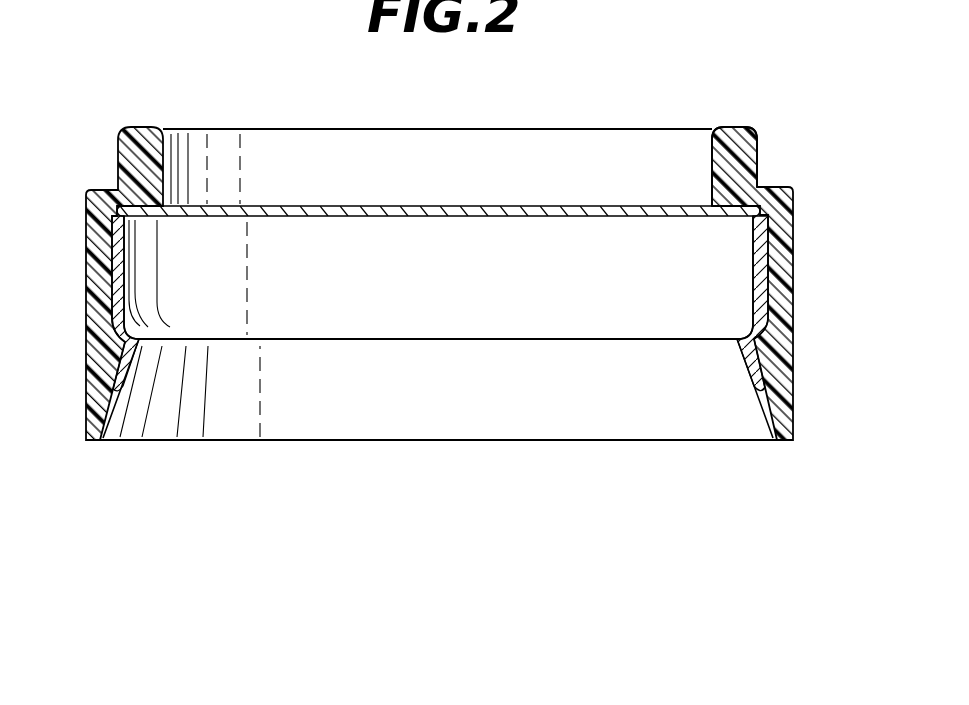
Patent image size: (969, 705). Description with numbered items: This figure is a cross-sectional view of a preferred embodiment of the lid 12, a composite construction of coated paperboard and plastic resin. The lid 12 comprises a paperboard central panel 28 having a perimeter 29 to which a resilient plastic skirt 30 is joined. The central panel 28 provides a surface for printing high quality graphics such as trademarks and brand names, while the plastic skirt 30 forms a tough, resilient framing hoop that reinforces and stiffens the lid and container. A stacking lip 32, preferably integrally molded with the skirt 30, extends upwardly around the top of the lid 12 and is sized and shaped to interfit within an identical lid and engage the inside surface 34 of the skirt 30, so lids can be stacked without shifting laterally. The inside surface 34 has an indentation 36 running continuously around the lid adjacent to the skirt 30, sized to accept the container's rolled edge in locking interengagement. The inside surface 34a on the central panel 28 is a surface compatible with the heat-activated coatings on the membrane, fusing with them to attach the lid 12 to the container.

The lid 12 is at (790, 188).
The paperboard central panel 28 is at (413, 205).
The perimeter 29 is at (120, 293).
The resilient plastic skirt 30 is at (92, 410).
The stacking lip 32 is at (738, 127).
The inside surface 34 is at (130, 377).
The inside surface 34a is at (180, 222).
The indentation 36 is at (87, 290).